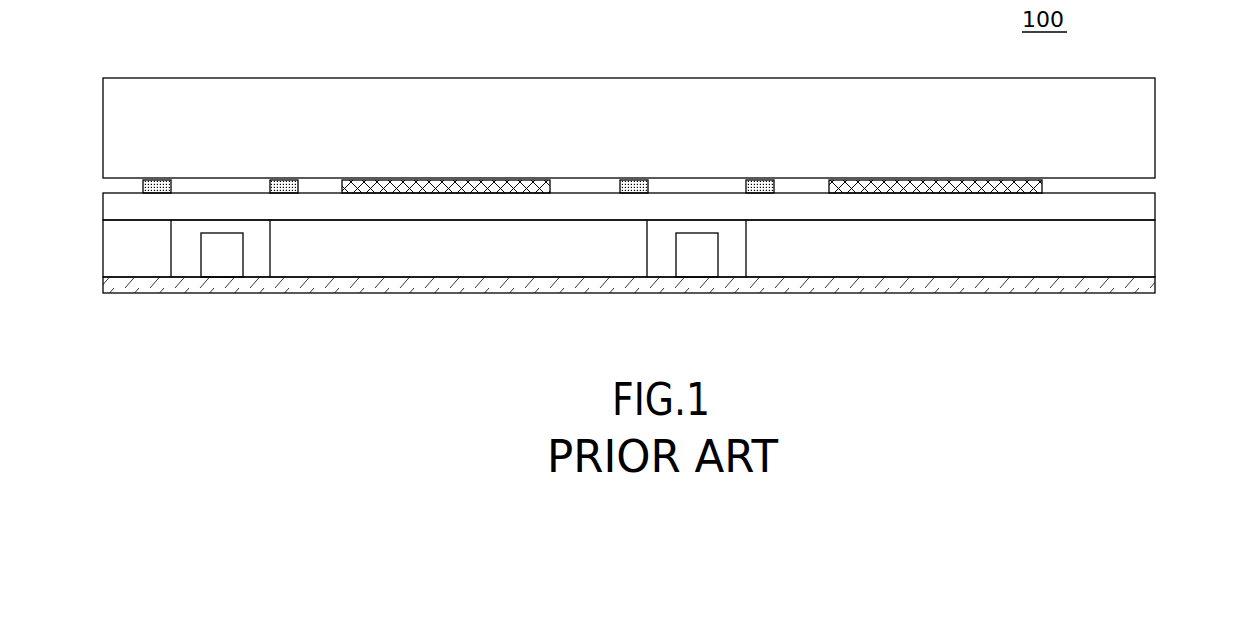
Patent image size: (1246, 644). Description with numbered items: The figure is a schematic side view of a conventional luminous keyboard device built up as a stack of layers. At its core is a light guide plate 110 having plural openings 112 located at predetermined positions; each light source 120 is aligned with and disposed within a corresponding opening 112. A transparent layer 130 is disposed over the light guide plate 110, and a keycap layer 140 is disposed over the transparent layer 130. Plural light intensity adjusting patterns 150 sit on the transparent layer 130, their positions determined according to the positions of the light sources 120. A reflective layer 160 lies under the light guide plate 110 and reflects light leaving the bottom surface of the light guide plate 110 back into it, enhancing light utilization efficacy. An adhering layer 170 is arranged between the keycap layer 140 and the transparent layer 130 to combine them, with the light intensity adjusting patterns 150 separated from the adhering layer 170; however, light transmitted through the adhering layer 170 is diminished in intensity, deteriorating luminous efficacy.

The light guide plate 110 is at (1142, 257).
The openings 112 is at (266, 260).
The light sources 120 is at (212, 262).
The transparent layer 130 is at (1142, 210).
The keycap layer 140 is at (1142, 142).
The light intensity adjusting patterns 150 is at (158, 180).
The reflective layer 160 is at (1138, 285).
The adhering layer 170 is at (445, 183).